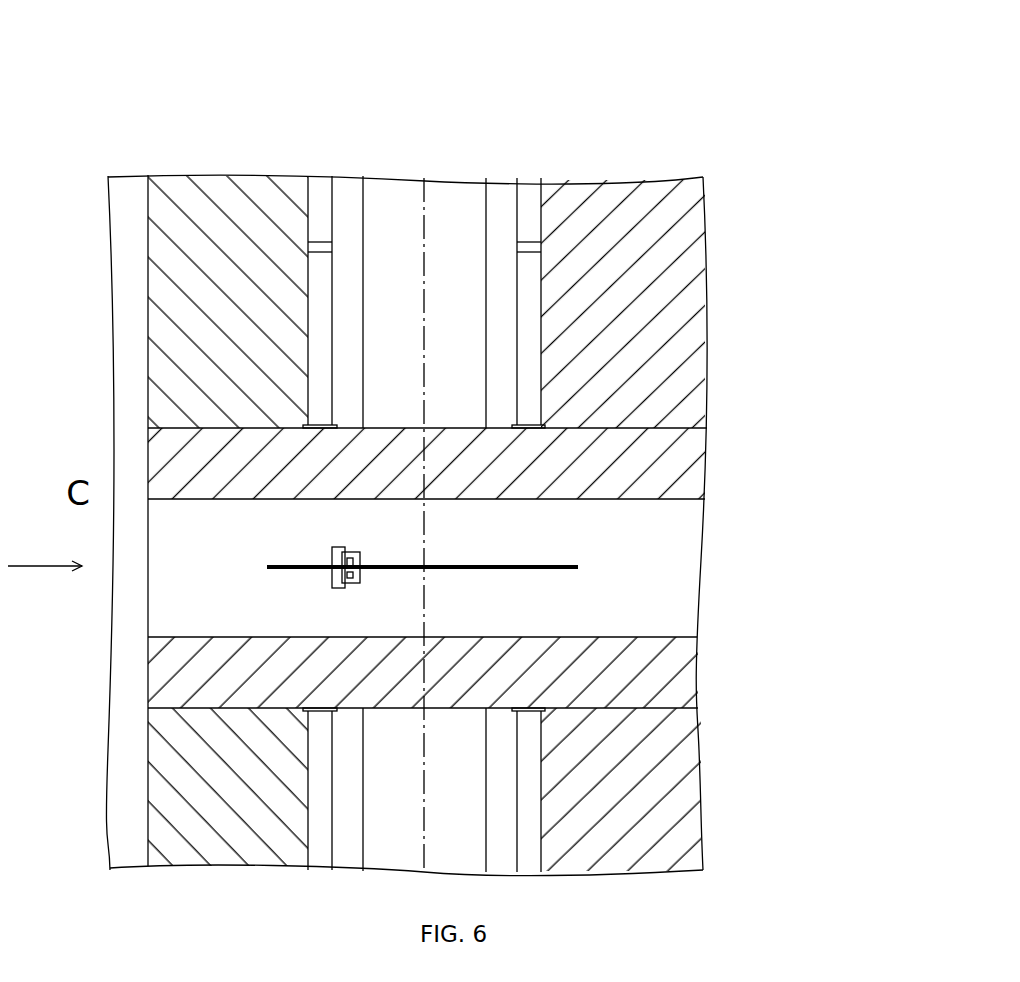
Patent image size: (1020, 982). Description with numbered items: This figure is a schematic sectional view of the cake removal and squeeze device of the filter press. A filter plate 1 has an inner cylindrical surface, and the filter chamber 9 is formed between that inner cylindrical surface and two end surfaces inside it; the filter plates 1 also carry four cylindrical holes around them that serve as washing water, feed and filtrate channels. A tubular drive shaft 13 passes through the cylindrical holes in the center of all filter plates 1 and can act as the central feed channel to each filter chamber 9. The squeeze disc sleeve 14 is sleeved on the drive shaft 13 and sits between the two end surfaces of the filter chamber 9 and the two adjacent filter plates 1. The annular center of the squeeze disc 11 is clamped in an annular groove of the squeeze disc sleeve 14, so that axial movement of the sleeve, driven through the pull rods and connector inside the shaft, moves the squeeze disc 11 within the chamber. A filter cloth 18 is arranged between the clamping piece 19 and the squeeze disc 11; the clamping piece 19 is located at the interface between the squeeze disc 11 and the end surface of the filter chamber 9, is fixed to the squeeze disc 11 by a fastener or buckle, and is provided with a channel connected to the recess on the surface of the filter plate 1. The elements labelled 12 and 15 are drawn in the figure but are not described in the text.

The filter plate 1 is at (222, 197).
The filter chamber 9 is at (347, 307).
The squeeze disc 11 is at (332, 190).
The guide pin 12 is at (320, 248).
The drive shaft 13 is at (597, 662).
The squeeze disc sleeve 14 is at (530, 428).
The pin seat 15 is at (327, 428).
The filter cloth 18 is at (308, 212).
The clamping piece 19 is at (332, 232).